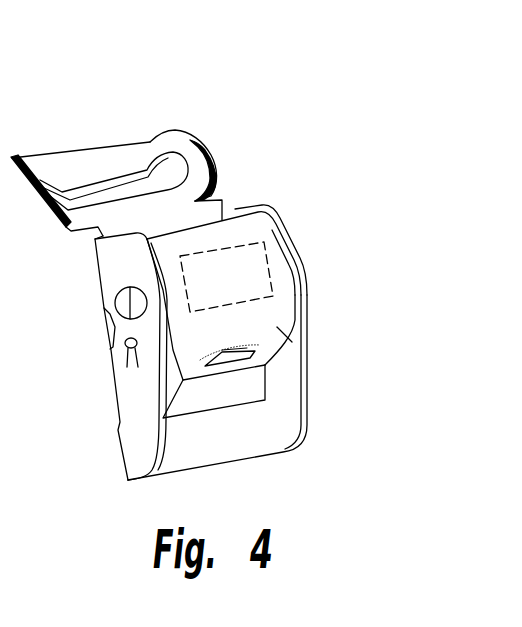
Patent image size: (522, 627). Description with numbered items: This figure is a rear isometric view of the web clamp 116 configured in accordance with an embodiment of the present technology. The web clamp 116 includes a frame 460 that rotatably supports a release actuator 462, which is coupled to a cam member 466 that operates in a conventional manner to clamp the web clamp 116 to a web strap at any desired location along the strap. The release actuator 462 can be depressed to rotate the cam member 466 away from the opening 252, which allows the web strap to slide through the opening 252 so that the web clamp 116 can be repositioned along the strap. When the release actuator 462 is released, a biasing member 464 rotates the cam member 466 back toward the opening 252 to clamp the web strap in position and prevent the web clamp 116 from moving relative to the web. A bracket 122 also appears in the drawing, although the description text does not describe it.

The mounting bracket 122 is at (120, 198).
The cam member 466 is at (222, 200).
The opening 252 is at (236, 207).
The web clamp 116 is at (327, 251).
The frame 460 is at (302, 398).
The release actuator 462 is at (300, 341).
The biasing member 464 is at (226, 277).